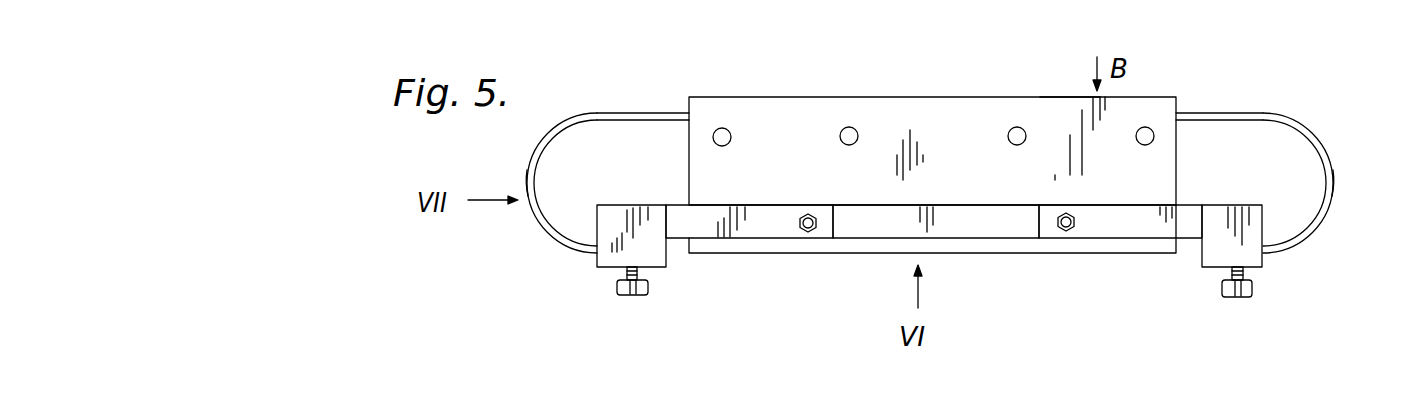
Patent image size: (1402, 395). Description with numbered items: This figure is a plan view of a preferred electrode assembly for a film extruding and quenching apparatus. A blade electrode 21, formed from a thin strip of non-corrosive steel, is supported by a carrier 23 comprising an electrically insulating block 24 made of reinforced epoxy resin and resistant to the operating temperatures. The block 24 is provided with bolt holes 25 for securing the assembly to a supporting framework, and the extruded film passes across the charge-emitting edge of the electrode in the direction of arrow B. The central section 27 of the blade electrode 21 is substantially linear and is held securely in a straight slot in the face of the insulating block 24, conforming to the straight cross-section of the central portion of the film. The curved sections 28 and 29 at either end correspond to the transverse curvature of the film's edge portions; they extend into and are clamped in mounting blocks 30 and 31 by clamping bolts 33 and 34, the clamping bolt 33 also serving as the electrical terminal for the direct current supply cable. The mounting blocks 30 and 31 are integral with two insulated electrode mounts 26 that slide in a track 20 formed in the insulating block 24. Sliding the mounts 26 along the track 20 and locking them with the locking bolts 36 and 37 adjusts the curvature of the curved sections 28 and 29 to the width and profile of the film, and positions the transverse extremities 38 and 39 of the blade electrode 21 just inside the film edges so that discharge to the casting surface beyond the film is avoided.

The track 20 is at (981, 228).
The blade electrode 21 is at (612, 112).
The carrier 23 is at (1063, 92).
The insulating block 24 is at (766, 125).
The bolt holes 25 is at (852, 127).
The insulated electrode mounts 26 is at (775, 228).
The central section 27 is at (1195, 112).
The curved section 28 is at (546, 128).
The curved section 29 is at (1293, 118).
The mounting block 30 is at (611, 247).
The mounting block 31 is at (1245, 255).
The clamping bolt 33 is at (647, 293).
The clamping bolt 34 is at (1221, 292).
The locking bolt 36 is at (809, 232).
The locking bolt 37 is at (1068, 232).
The transverse extremity 38 is at (527, 200).
The transverse extremity 39 is at (1334, 184).